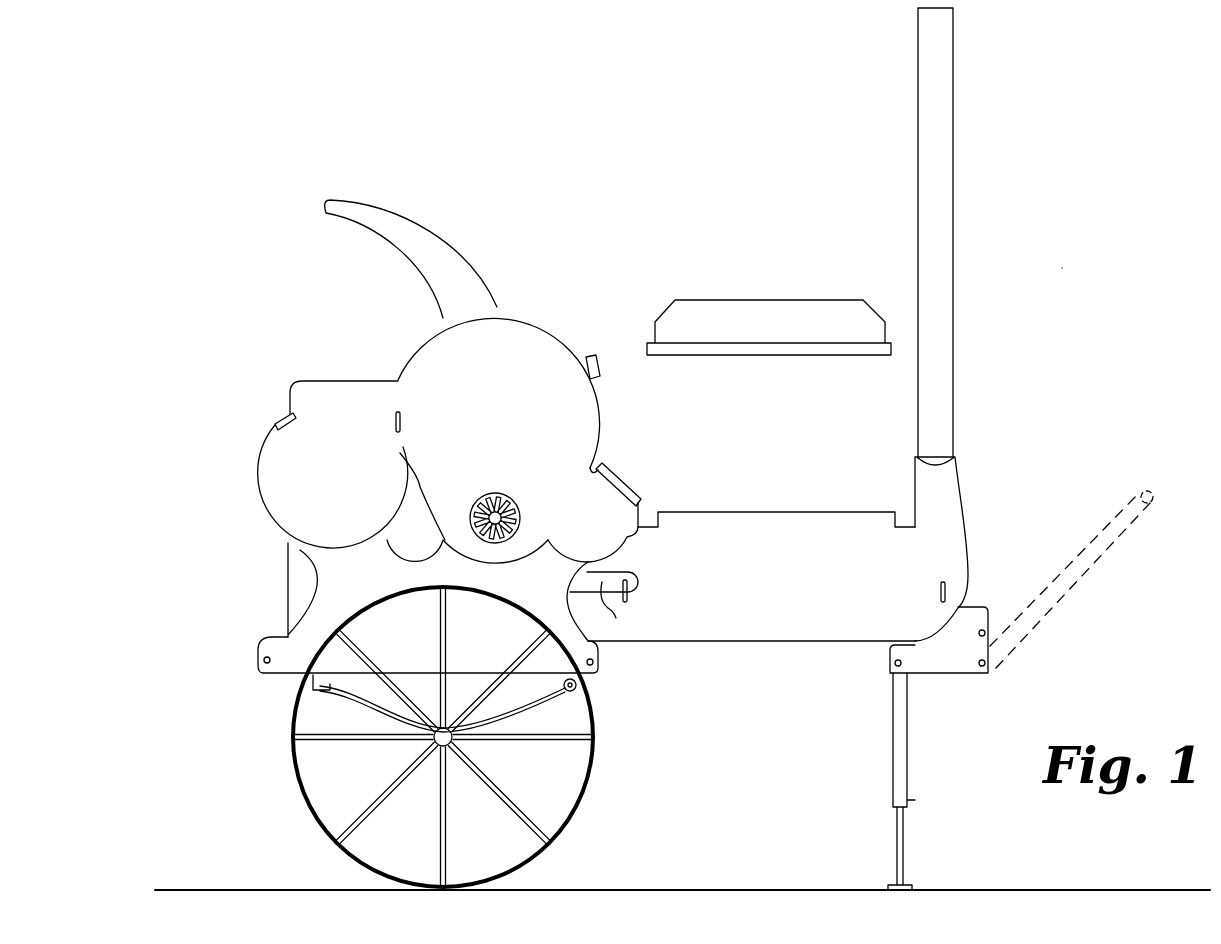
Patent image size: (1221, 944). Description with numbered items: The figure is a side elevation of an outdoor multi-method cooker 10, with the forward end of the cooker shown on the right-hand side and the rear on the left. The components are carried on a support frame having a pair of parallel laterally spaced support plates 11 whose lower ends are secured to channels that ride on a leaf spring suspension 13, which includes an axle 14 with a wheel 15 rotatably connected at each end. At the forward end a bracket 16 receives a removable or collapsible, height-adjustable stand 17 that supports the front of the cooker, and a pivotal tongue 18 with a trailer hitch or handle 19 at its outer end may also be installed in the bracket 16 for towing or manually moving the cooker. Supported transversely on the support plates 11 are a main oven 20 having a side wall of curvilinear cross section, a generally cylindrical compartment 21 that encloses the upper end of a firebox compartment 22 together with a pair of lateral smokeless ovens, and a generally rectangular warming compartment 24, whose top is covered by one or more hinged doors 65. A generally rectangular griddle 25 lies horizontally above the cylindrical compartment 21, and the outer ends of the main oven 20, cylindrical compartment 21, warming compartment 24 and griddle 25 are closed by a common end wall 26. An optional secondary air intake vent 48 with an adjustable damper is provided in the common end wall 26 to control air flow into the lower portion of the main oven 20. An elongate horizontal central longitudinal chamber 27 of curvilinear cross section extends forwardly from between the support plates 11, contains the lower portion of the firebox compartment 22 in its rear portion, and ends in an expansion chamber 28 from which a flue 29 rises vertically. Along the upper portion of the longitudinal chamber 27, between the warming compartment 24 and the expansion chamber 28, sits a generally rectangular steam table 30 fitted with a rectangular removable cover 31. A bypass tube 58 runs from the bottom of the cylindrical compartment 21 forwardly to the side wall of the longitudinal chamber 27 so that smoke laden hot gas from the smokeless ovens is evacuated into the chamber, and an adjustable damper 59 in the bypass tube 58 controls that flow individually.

The outdoor multi-method cooker 10 is at (1062, 268).
The support plate 11 is at (590, 640).
The leaf spring suspension 13 is at (375, 716).
The axle 14 is at (455, 742).
The wheel 15 is at (592, 770).
The bracket 16 is at (935, 666).
The stand 17 is at (905, 777).
The pivotal tongue 18 is at (1060, 582).
The handle grip 19 is at (1142, 494).
The main oven 20 is at (550, 318).
The generally cylindrical compartment 21 is at (259, 454).
The firebox compartment 22 is at (290, 590).
The warming compartment 24 is at (630, 540).
The griddle 25 is at (341, 376).
The common end wall 26 is at (497, 438).
The central longitudinal chamber 27 is at (780, 584).
The expansion chamber 28 is at (945, 497).
The flue 29 is at (920, 188).
The steam table 30 is at (767, 513).
The removable cover 31 is at (758, 300).
The secondary air intake vent 48 is at (500, 495).
The bypass tube 58 is at (607, 608).
The adjustable damper 59 is at (632, 592).
The hinged door 65 is at (618, 476).